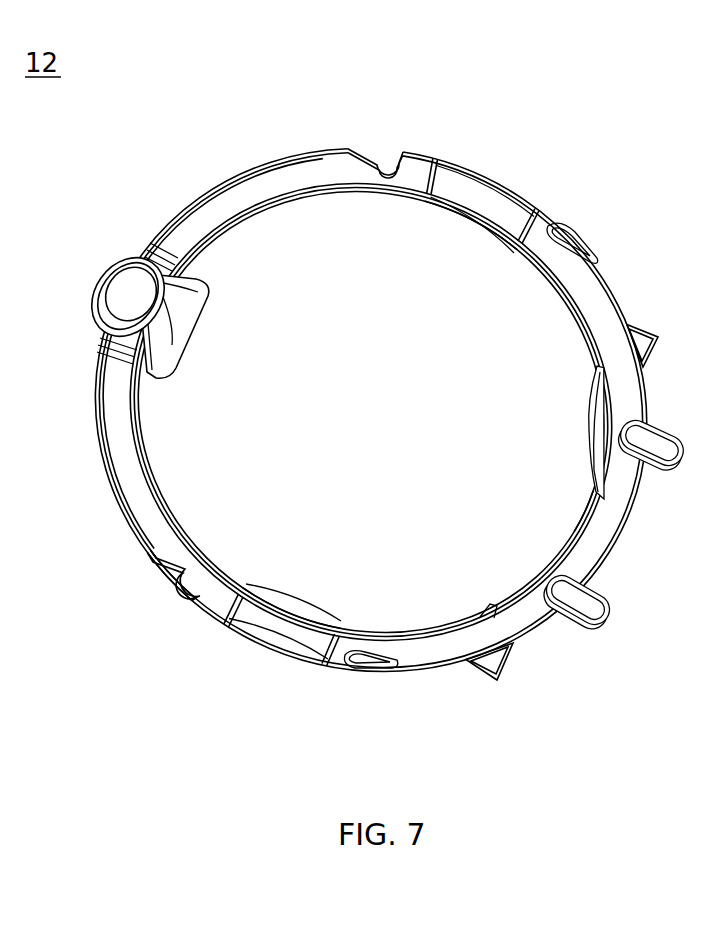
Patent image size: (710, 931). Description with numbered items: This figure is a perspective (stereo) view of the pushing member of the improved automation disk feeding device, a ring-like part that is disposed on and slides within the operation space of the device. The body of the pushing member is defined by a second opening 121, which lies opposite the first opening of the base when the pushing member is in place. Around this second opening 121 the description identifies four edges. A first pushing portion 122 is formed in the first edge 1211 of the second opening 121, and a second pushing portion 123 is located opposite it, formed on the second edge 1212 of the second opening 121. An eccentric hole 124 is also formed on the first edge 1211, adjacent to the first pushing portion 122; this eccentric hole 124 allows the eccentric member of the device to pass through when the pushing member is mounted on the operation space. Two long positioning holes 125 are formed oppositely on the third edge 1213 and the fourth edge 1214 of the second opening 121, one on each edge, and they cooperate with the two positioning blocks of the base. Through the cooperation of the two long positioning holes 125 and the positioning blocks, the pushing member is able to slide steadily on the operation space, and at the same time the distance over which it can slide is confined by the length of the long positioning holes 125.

The second opening 121 is at (346, 330).
The first edge 1211 is at (160, 300).
The second edge 1212 is at (597, 493).
The third edge 1213 is at (298, 617).
The fourth edge 1214 is at (465, 217).
The first pushing portion 122 is at (168, 333).
The second pushing portion 123 is at (563, 527).
The eccentric hole 124 is at (128, 288).
The long positioning holes 125 is at (485, 203).